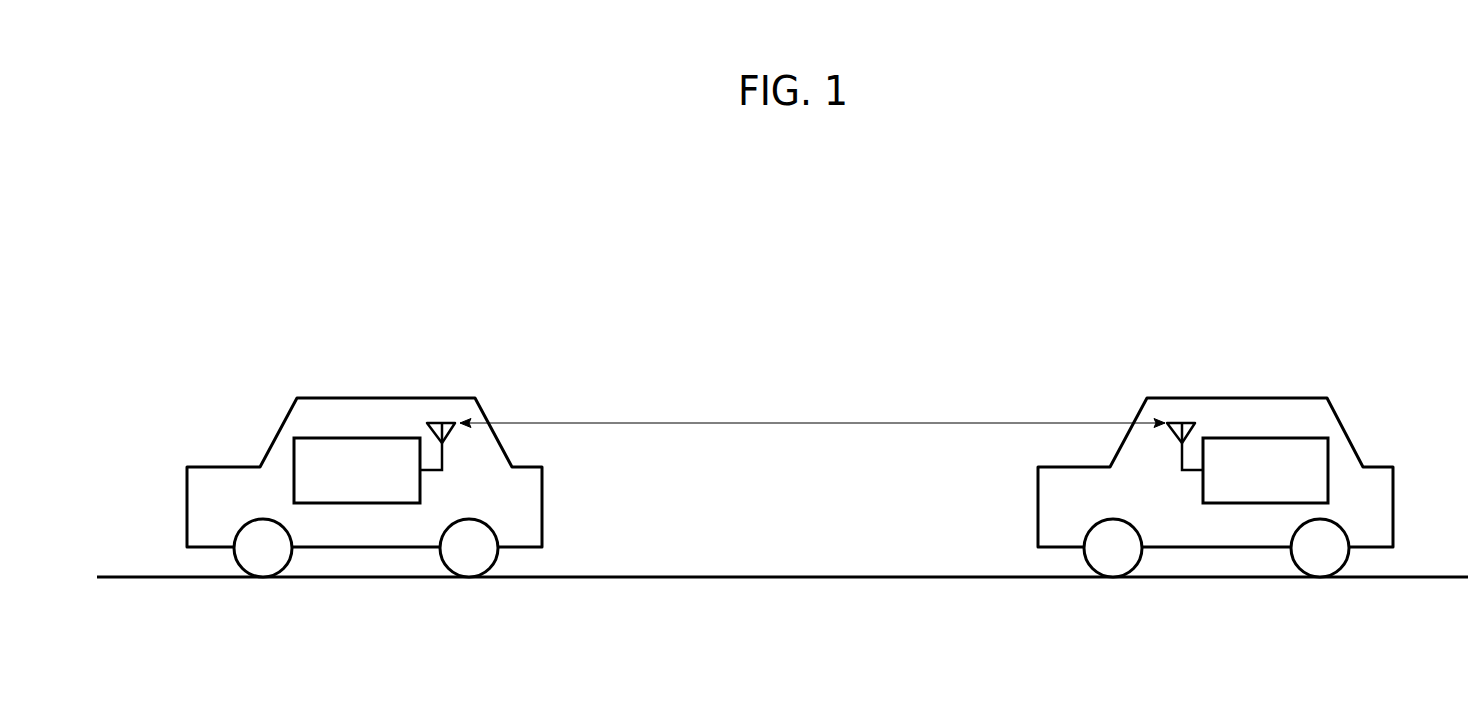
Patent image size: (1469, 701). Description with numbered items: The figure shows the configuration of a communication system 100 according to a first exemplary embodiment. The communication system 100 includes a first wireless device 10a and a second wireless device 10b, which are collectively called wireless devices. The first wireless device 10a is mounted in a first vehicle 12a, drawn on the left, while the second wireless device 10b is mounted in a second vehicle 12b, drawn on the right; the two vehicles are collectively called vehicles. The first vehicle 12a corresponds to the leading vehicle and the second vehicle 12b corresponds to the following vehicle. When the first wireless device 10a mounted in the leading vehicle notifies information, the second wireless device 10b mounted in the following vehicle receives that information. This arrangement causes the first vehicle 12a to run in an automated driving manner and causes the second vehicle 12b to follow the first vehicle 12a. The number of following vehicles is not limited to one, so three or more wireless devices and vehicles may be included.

The communication system 100 is at (817, 672).
The first vehicle 12a is at (323, 398).
The second vehicle 12b is at (1237, 398).
The first wireless device 10a is at (375, 438).
The second wireless device 10b is at (1292, 438).